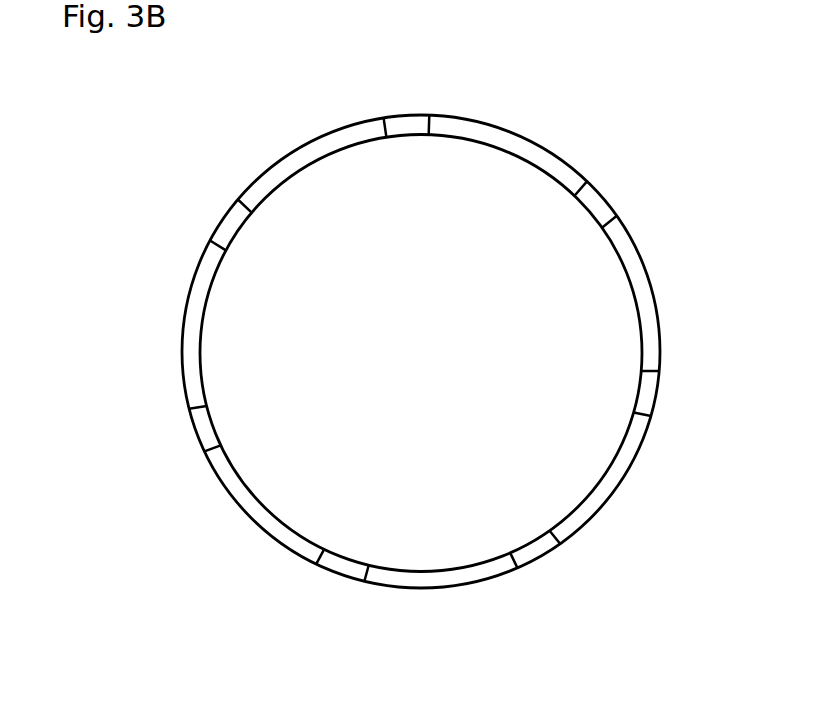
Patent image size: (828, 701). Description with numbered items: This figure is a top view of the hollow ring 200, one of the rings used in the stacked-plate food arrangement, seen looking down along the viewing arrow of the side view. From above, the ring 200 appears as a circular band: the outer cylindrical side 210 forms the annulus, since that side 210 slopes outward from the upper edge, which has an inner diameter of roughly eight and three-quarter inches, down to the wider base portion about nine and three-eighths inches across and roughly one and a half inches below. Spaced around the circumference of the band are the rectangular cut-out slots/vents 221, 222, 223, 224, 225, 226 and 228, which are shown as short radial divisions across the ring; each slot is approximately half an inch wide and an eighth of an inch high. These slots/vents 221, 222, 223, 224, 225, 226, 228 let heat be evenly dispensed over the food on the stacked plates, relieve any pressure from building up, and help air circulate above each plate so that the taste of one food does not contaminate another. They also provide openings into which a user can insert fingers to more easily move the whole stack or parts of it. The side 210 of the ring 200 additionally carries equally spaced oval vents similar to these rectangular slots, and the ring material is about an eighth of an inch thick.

The hollow ring 200 is at (125, 143).
The outer cylindrical side 210 is at (210, 239).
The rectangular cut-out slot/vent 221 is at (198, 430).
The rectangular cut-out slot/vent 222 is at (340, 563).
The rectangular cut-out slot/vent 223 is at (537, 553).
The rectangular cut-out slot/vent 224 is at (650, 392).
The rectangular cut-out slot/vent 225 is at (595, 202).
The rectangular cut-out slot/vent 226 is at (412, 128).
The rectangular cut-out slot/vent 228 is at (233, 223).